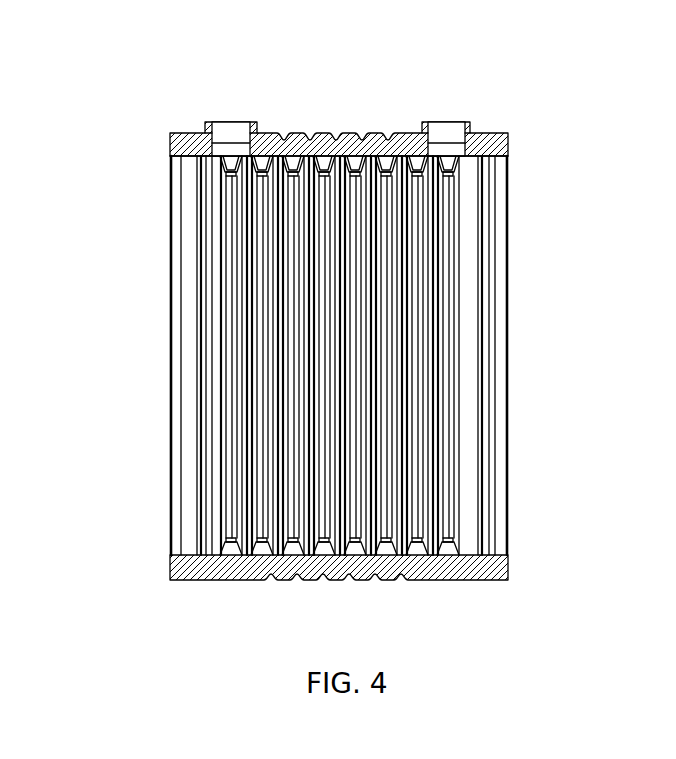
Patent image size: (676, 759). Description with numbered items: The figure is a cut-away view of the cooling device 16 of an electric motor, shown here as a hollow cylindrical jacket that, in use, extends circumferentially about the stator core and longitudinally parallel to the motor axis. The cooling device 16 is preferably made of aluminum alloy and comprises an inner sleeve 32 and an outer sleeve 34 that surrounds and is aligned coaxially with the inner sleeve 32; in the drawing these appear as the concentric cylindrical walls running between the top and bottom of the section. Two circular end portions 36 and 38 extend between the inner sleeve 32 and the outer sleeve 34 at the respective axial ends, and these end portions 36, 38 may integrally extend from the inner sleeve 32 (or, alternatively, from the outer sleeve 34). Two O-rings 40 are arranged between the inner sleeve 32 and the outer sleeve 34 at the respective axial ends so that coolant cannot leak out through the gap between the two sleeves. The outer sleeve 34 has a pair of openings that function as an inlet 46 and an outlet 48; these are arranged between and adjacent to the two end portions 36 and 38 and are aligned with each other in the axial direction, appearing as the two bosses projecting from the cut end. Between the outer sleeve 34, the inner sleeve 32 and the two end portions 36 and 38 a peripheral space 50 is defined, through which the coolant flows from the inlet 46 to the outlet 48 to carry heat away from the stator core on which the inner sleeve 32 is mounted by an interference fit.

The cooling device 16 is at (112, 87).
The inner sleeve 32 is at (336, 327).
The outer sleeve 34 is at (485, 573).
The end portion 36 is at (468, 227).
The end portion 38 is at (176, 199).
The O-ring 40 is at (190, 298).
The inlet 46 is at (237, 133).
The outlet 48 is at (452, 132).
The peripheral space 50 is at (339, 112).